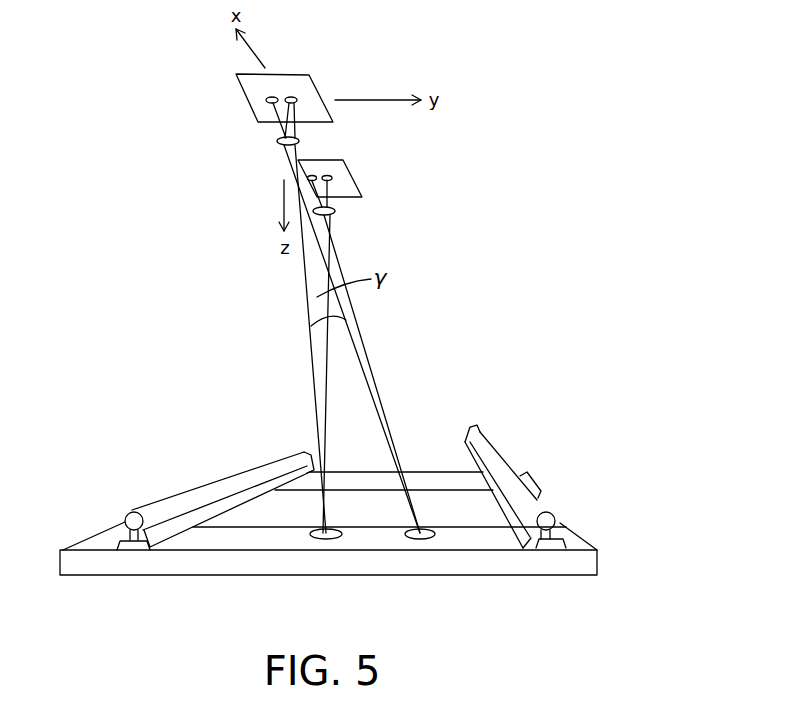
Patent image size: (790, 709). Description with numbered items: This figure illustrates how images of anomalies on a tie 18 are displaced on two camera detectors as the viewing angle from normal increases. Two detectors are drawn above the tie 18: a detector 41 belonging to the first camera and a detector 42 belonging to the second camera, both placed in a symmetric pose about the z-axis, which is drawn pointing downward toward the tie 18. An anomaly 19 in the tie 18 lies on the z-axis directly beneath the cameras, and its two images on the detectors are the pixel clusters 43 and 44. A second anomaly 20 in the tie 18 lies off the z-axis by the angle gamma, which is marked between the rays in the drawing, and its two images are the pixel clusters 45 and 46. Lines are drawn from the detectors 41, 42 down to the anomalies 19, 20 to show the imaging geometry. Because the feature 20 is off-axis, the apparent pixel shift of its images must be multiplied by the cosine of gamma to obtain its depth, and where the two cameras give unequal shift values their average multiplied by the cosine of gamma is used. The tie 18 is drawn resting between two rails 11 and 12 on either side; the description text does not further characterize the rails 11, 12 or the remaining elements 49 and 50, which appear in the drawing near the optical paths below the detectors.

The first guide rail 11 is at (207, 483).
The second guide rail 12 is at (494, 443).
The tie 18 is at (85, 540).
The anomaly 19 is at (317, 538).
The anomaly 20 is at (428, 538).
The detector 41 is at (297, 73).
The detector 42 is at (343, 160).
The pixel cluster 43 is at (280, 123).
The pixel cluster 44 is at (333, 178).
The pixel cluster 45 is at (266, 101).
The pixel cluster 46 is at (334, 193).
The optical axis 49 is at (285, 157).
The second lens 50 is at (336, 214).